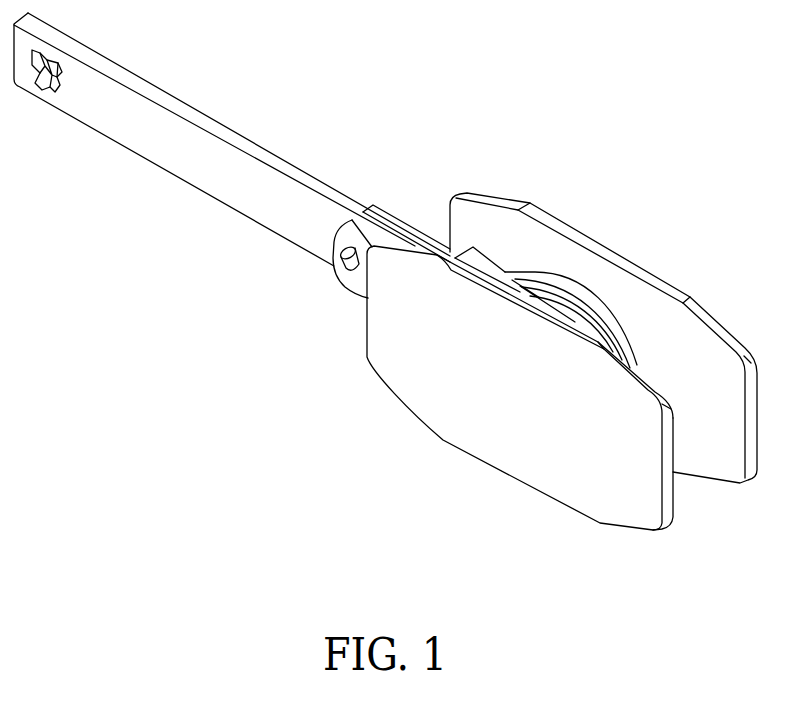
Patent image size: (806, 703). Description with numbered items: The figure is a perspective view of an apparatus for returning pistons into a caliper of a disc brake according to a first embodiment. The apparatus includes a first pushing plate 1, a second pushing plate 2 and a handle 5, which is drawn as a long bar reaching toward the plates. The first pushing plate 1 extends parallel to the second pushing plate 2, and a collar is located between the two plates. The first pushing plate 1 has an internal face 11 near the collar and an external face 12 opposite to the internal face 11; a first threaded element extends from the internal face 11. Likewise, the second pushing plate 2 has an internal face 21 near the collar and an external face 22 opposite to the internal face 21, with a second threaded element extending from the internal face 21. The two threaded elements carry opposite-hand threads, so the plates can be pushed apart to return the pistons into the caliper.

The first pushing plate 1 is at (533, 408).
The internal face 11 is at (673, 497).
The external face 12 is at (458, 432).
The second pushing plate 2 is at (603, 311).
The internal face 21 is at (500, 217).
The external face 22 is at (588, 232).
The handle 5 is at (208, 117).